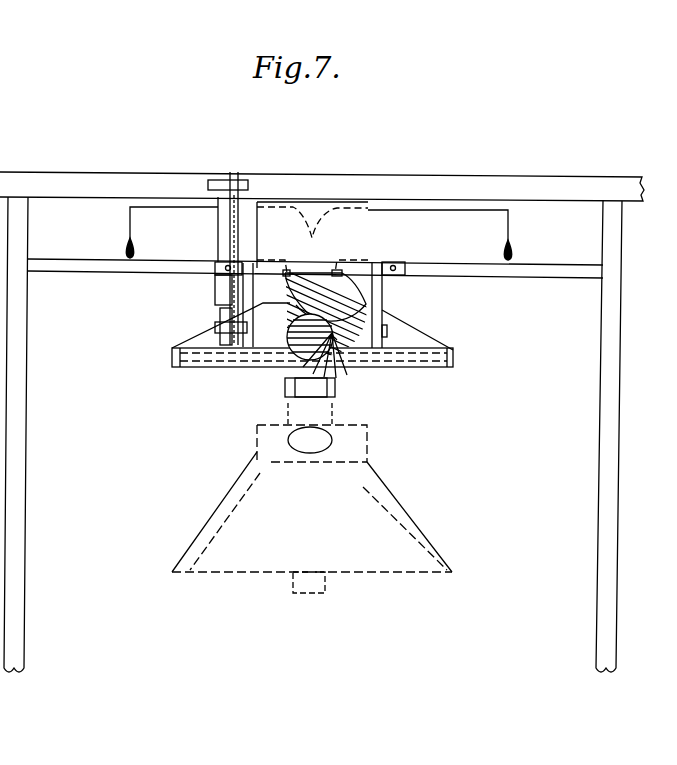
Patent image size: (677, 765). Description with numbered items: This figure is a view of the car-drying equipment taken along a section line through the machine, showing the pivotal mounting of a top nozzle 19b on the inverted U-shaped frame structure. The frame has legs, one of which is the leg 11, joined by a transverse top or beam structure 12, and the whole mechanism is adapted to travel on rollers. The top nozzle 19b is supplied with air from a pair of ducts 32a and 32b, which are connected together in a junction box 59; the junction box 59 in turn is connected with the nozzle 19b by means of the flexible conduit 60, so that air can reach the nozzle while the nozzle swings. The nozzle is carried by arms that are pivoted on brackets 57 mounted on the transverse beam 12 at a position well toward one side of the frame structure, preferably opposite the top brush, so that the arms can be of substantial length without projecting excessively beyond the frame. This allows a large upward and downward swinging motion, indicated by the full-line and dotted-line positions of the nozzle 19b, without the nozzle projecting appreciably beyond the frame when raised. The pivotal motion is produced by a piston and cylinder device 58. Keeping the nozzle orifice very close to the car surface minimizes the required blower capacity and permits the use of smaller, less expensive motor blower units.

The leg 11 is at (622, 528).
The transverse top or beam structure 12 is at (393, 168).
The top nozzle 19b is at (197, 335).
The duct 32a is at (152, 205).
The duct 32b is at (463, 210).
The bracket 57 is at (247, 285).
The piston and cylinder device 58 is at (213, 228).
The junction box 59 is at (342, 217).
The flexible conduit 60 is at (360, 375).